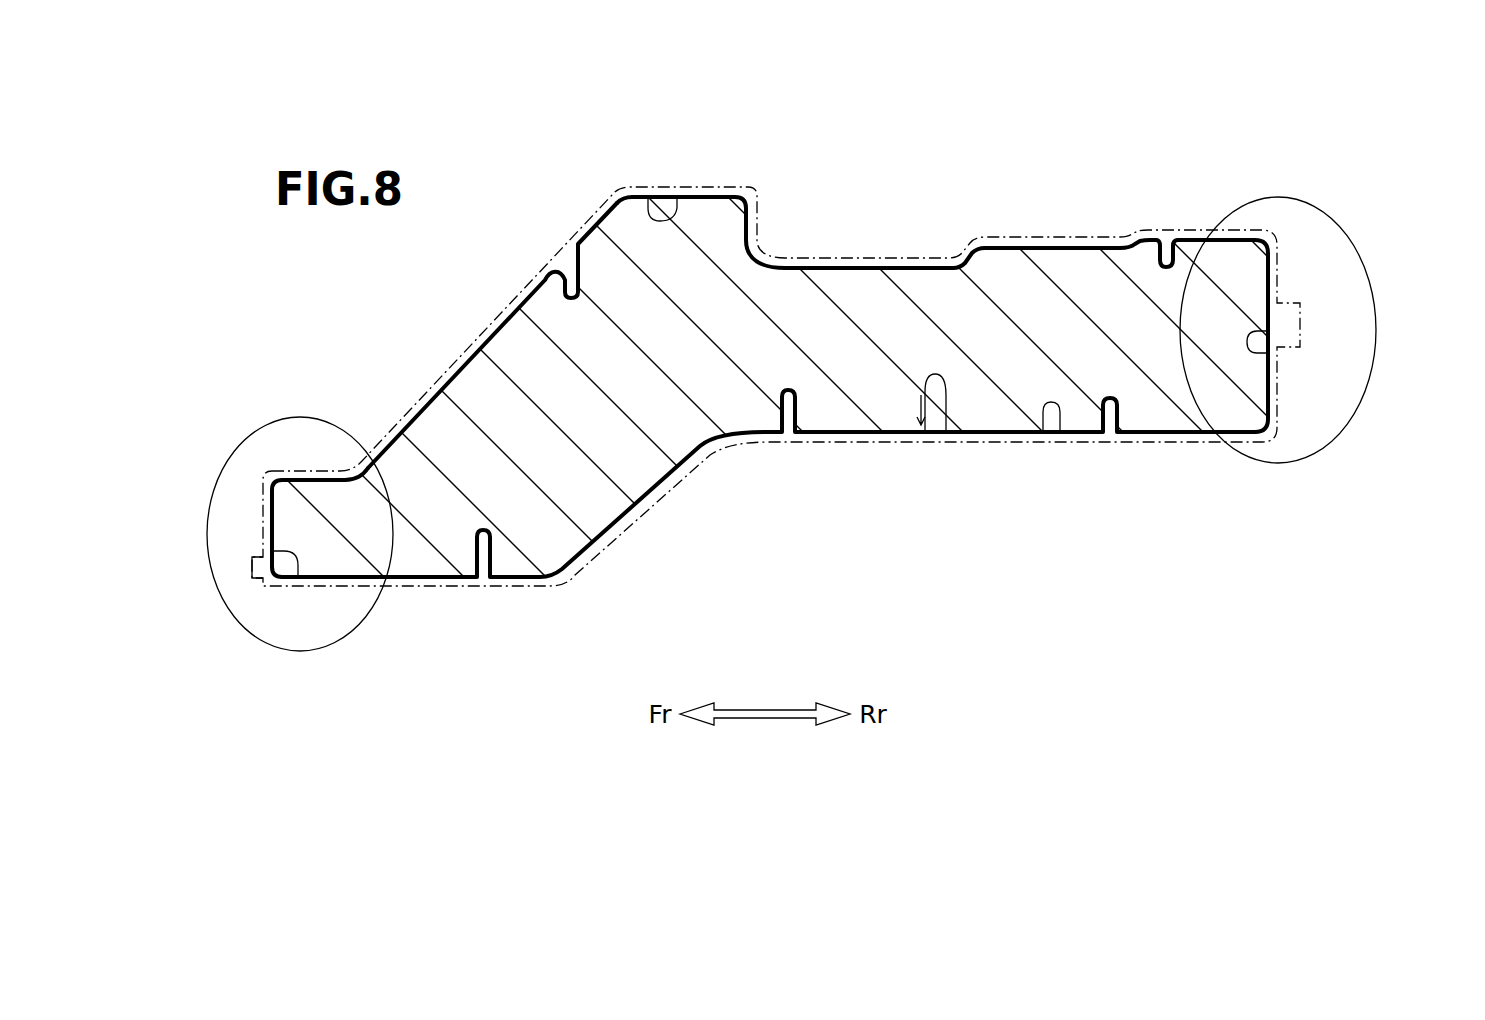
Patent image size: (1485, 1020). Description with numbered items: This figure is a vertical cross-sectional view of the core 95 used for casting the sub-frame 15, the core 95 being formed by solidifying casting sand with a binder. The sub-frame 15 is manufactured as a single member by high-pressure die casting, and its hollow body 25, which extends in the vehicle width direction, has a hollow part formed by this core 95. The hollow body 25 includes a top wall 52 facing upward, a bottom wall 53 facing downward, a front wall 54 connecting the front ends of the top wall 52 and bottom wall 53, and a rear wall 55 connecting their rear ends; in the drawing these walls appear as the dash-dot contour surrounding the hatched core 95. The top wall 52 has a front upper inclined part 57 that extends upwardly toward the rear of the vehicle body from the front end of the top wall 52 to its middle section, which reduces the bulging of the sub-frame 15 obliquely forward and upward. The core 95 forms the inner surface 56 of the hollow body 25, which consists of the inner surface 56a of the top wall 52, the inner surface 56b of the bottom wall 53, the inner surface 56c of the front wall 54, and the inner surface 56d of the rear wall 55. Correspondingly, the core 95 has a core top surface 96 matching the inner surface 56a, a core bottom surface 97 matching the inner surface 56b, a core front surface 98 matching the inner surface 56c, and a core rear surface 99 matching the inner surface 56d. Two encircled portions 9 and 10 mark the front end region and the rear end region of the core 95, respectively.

The sub-frame 15 is at (1128, 163).
The hollow body 25 is at (1172, 232).
The top wall 52 is at (710, 188).
The bottom wall 53 is at (999, 441).
The front wall 54 is at (262, 514).
The rear wall 55 is at (1280, 273).
The inner surface 56 is at (944, 430).
The inner surface of the top wall 56a is at (651, 218).
The inner surface of the bottom wall 56b is at (1054, 431).
The inner surface of the front wall 56c is at (292, 582).
The inner surface of the rear wall 56d is at (1262, 348).
The front upper inclined part 57 is at (460, 344).
The core 95 is at (857, 266).
The core top surface 96 is at (1030, 247).
The core bottom surface 97 is at (887, 428).
The core front surface 98 is at (278, 535).
The core rear surface 99 is at (1260, 384).
The detail region of FIG. 9 is at (264, 527).
The detail region of FIG. 10 is at (1320, 328).